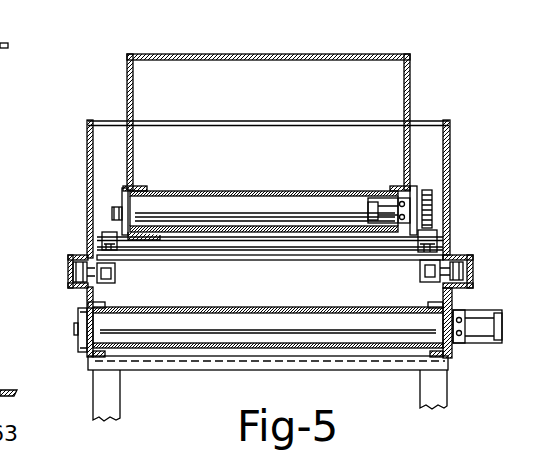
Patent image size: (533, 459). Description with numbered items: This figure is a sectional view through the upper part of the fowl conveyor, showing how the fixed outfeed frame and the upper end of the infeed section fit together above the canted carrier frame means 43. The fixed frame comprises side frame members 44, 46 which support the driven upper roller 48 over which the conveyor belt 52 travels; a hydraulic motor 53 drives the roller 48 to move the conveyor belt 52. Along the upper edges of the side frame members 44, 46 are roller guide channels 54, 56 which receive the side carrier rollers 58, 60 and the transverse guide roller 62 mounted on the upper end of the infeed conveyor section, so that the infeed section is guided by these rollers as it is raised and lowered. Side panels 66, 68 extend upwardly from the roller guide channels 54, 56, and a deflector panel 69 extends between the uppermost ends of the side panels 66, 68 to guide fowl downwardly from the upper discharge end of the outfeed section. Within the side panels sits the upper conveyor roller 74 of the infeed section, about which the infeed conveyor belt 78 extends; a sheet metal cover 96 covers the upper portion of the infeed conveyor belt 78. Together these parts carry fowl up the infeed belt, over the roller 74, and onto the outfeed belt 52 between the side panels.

The canted carrier frame means 43 is at (116, 398).
The side frame member 44 is at (85, 302).
The side frame member 46 is at (448, 360).
The driven upper roller 48 is at (268, 308).
The conveyor belt 52 is at (378, 309).
The hydraulic motor 53 is at (475, 346).
The roller guide channel 54 is at (66, 270).
The roller guide channel 56 is at (473, 262).
The side carrier roller 58 is at (80, 265).
The side carrier roller 60 is at (473, 272).
The transverse guide roller 62 is at (67, 283).
The side panel 66 is at (86, 169).
The side panel 68 is at (451, 172).
The deflector panel 69 is at (271, 121).
The upper conveyor roller 74 is at (194, 201).
The infeed conveyor belt 78 is at (328, 193).
The sheet metal cover 96 is at (256, 57).